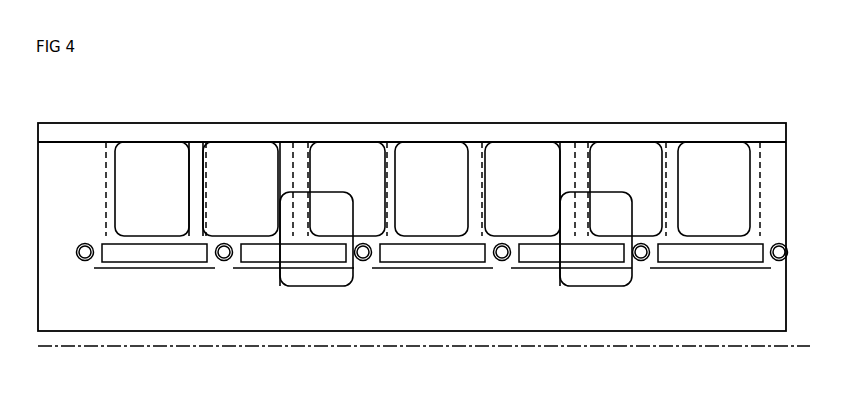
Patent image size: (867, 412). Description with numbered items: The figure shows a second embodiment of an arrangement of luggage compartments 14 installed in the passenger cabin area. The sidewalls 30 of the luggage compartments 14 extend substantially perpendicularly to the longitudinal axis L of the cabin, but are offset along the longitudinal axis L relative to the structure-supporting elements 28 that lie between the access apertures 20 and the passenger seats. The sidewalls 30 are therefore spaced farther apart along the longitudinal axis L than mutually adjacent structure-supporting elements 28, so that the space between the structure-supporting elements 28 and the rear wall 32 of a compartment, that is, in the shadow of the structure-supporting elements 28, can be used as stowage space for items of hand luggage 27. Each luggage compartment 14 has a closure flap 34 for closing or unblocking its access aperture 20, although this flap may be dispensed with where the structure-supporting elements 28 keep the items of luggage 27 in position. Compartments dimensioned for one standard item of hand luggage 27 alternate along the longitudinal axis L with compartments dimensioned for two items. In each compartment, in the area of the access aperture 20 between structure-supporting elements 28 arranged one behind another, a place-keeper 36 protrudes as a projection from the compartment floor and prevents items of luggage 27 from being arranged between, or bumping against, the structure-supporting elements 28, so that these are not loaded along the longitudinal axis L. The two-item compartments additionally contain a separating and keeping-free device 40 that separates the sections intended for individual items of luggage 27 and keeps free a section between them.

The luggage compartment 14 is at (195, 150).
The access aperture 20 is at (150, 273).
The item of hand luggage 27 is at (142, 148).
The structure-supporting element 28 is at (86, 256).
The sidewall 30 is at (106, 152).
The rear wall 32 is at (284, 140).
The closure flap 34 is at (195, 269).
The place-keeper 36 is at (152, 248).
The separating and keeping-free device 40 is at (292, 152).
The longitudinal axis L is at (762, 350).